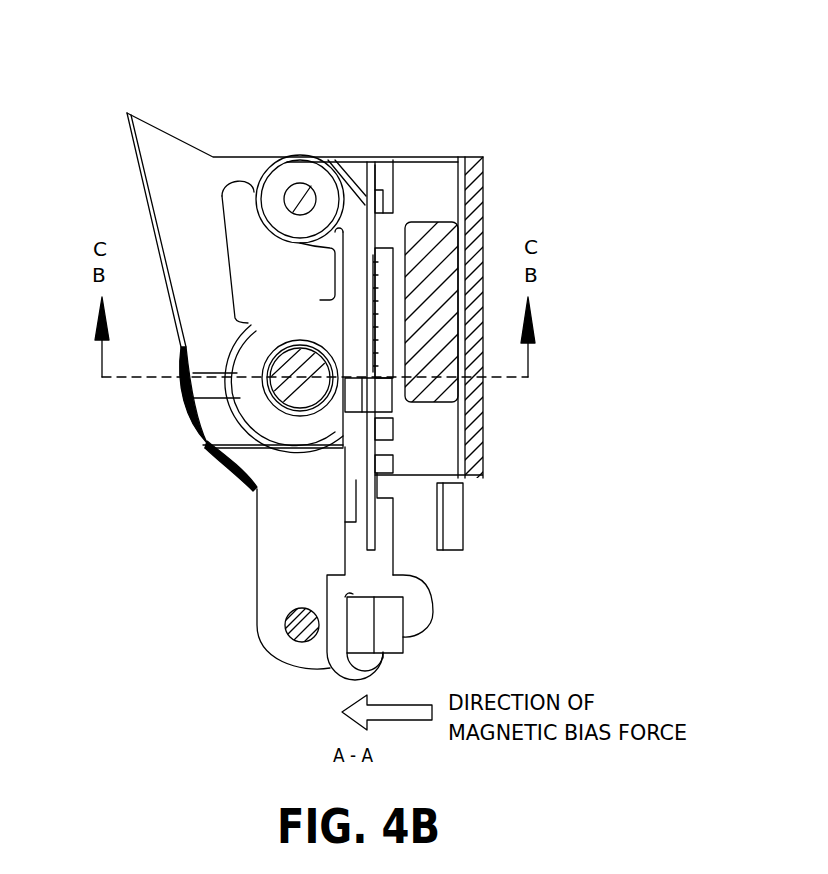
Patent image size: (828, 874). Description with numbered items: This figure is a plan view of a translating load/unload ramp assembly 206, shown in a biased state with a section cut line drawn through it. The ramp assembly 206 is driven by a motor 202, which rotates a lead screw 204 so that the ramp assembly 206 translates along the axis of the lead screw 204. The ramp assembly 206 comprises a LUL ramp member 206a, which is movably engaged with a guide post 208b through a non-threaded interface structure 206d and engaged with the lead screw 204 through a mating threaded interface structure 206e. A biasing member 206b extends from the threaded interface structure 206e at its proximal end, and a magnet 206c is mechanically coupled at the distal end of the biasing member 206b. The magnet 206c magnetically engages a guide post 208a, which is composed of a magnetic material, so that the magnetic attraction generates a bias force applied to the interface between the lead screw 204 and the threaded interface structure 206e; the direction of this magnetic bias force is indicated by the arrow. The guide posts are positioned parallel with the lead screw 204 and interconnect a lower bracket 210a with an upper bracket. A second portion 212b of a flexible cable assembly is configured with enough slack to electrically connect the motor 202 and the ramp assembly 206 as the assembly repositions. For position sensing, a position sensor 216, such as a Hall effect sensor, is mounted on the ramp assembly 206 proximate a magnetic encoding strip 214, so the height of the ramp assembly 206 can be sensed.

The motor 202 is at (190, 363).
The lead screw 204 is at (267, 390).
The ramp assembly 206 is at (112, 117).
The LUL ramp member 206a is at (170, 147).
The biasing member 206b is at (355, 503).
The magnet 206c is at (383, 642).
The non-threaded interface structure 206d is at (296, 172).
The threaded interface structure 206e is at (247, 417).
The guide post 208a is at (285, 637).
The guide post 208b is at (307, 193).
The lower bracket 210a is at (267, 580).
The second portion of flexible cable assembly 212b is at (455, 513).
The magnetic encoding strip 214 is at (440, 224).
The position sensor 216 is at (388, 322).